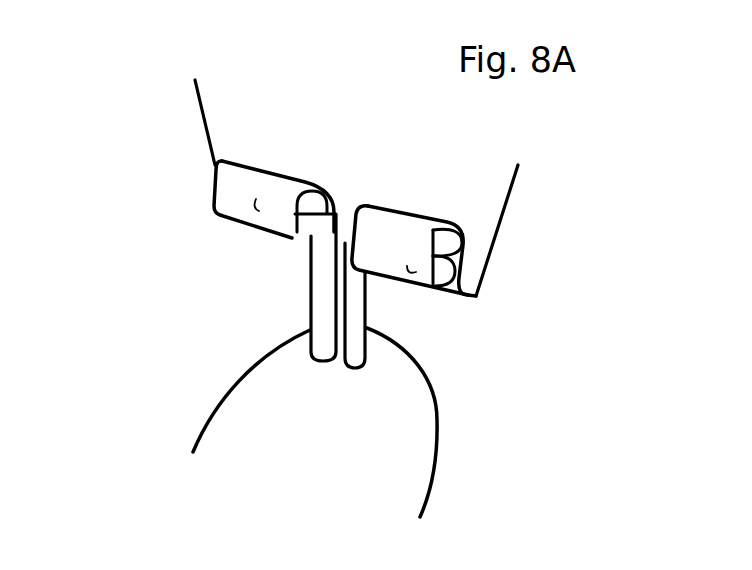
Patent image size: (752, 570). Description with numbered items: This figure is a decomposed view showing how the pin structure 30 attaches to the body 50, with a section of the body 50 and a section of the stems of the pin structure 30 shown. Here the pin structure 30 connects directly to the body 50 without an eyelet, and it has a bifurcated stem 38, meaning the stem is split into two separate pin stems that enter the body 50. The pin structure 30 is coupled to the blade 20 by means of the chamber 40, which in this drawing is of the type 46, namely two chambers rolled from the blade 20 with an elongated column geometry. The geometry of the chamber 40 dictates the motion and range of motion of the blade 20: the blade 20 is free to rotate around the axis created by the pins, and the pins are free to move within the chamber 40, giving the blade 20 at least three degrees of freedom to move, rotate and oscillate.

The blade 20 is at (453, 177).
The pin structure 30 is at (264, 228).
The bifurcated stem 38 is at (295, 275).
The chamber 40 is at (441, 316).
The chamber type 46 is at (255, 202).
The body 50 is at (282, 400).